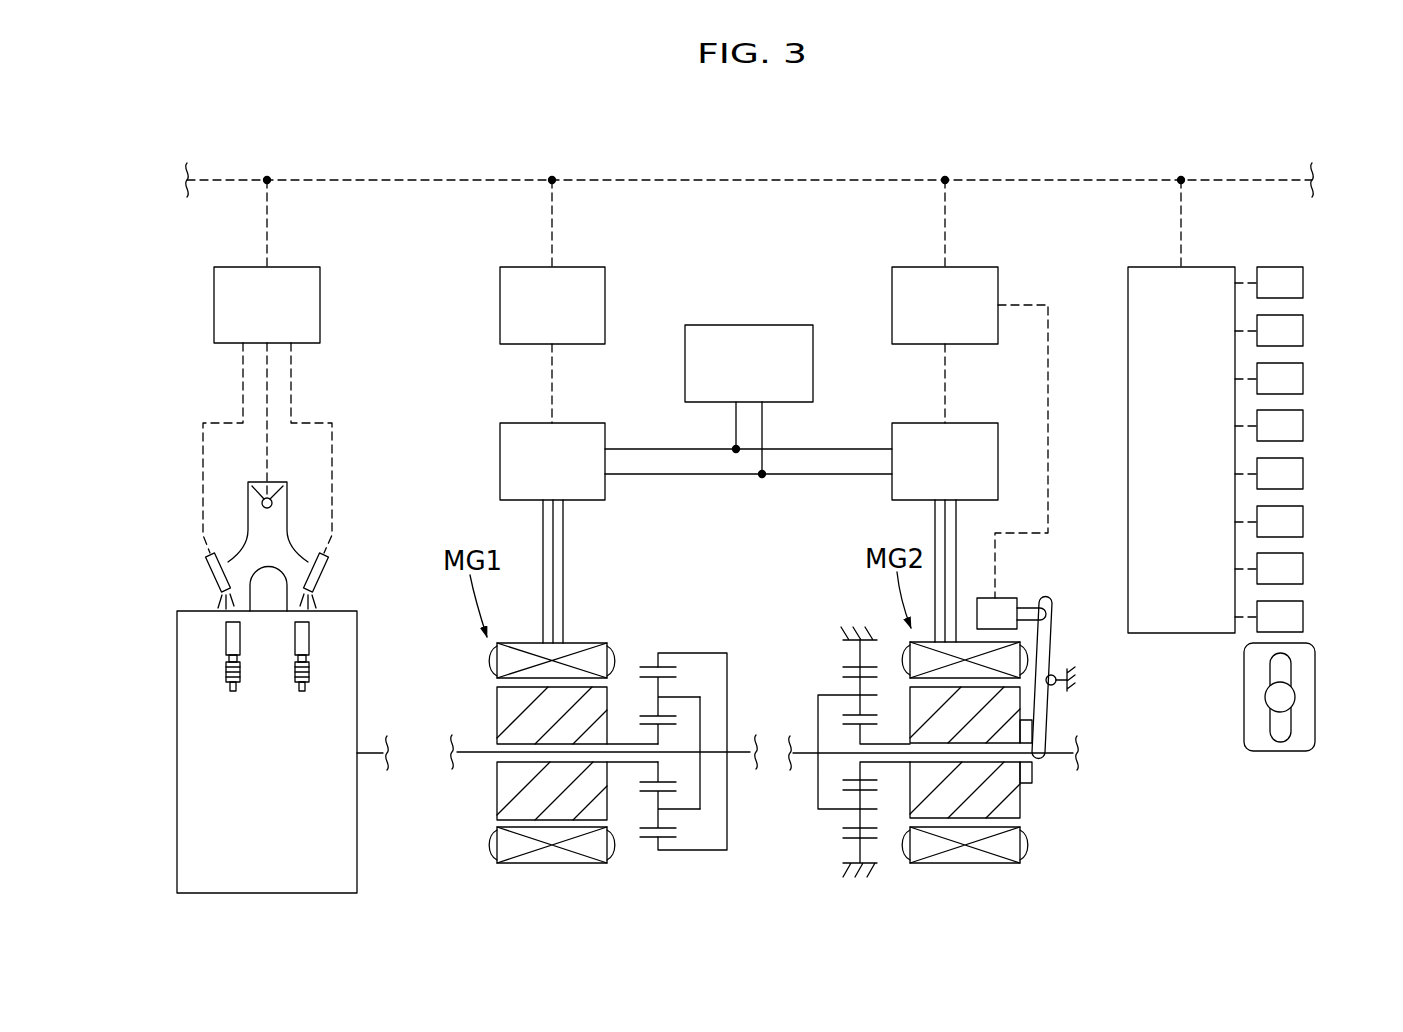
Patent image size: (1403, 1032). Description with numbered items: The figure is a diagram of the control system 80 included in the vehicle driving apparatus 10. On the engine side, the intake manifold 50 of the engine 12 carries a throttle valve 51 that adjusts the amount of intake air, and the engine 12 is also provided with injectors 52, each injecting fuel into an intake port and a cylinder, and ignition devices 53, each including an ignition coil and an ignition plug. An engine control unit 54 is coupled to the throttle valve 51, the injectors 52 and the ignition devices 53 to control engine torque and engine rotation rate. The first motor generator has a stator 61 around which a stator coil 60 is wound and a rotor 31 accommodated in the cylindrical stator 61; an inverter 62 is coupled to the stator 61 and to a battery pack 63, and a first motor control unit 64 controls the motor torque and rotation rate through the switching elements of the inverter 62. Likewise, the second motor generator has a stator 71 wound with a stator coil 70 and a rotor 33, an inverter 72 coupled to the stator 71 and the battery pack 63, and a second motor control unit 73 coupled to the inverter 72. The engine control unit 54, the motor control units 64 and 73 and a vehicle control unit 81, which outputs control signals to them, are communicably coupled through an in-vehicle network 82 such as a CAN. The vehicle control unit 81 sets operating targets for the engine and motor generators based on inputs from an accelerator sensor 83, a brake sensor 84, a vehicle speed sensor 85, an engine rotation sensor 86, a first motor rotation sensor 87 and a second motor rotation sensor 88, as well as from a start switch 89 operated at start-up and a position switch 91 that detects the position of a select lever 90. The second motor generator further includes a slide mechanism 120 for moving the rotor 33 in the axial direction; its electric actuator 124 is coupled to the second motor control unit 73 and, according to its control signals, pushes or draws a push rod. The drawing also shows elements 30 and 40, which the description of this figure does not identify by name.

The vehicle driving apparatus 10 is at (1307, 122).
The engine 12 is at (177, 651).
The planetary gear mechanism 30 is at (672, 650).
The rotor 31 is at (572, 822).
The rotor 33 is at (948, 822).
The reduction gear 40 is at (845, 615).
The intake manifold 50 is at (240, 545).
The throttle valve 51 is at (273, 505).
The injectors 52 is at (205, 570).
The ignition devices 53 is at (293, 690).
The engine control unit 54 is at (302, 266).
The stator coil 60 is at (613, 654).
The stator 61 is at (578, 644).
The inverter 62 is at (588, 423).
The battery pack 63 is at (795, 325).
The first motor control unit 64 is at (588, 267).
The stator coil 70 is at (900, 655).
The stator 71 is at (965, 642).
The inverter 72 is at (978, 423).
The second motor control unit 73 is at (978, 267).
The control system 80 is at (1167, 150).
The vehicle control unit 81 is at (1215, 267).
The in-vehicle network 82 is at (1060, 178).
The accelerator sensor 83 is at (1303, 287).
The brake sensor 84 is at (1303, 335).
The vehicle speed sensor 85 is at (1303, 383).
The engine rotation sensor 86 is at (1303, 430).
The first motor rotation sensor 87 is at (1303, 478).
The second motor rotation sensor 88 is at (1303, 526).
The start switch 89 is at (1303, 573).
The select lever 90 is at (1303, 621).
The position switch 91 is at (1315, 680).
The slide mechanism 120 is at (1078, 640).
The electric actuator 124 is at (1010, 597).